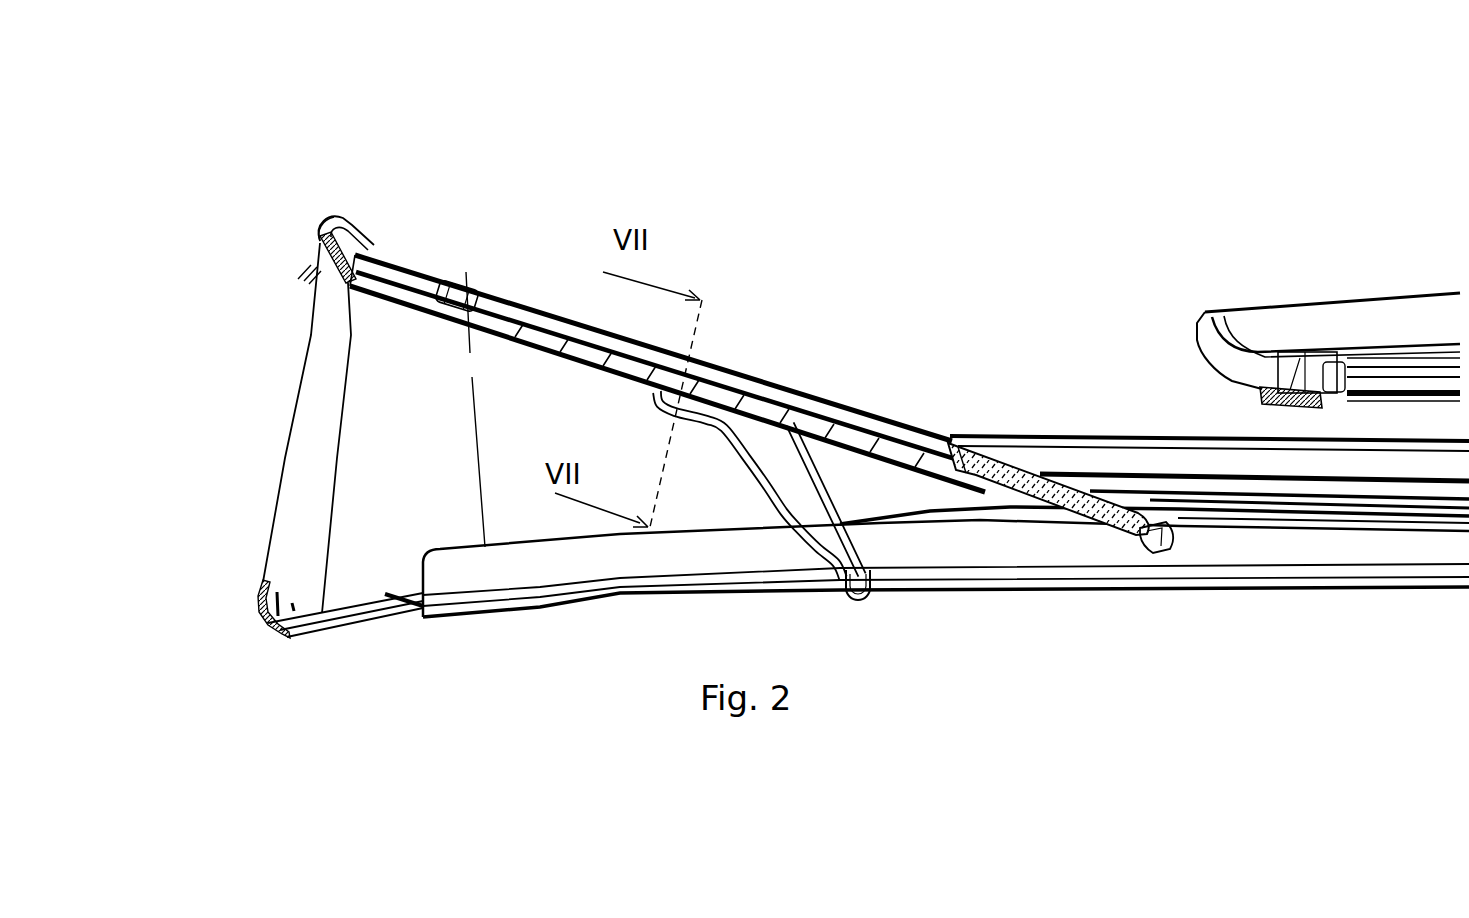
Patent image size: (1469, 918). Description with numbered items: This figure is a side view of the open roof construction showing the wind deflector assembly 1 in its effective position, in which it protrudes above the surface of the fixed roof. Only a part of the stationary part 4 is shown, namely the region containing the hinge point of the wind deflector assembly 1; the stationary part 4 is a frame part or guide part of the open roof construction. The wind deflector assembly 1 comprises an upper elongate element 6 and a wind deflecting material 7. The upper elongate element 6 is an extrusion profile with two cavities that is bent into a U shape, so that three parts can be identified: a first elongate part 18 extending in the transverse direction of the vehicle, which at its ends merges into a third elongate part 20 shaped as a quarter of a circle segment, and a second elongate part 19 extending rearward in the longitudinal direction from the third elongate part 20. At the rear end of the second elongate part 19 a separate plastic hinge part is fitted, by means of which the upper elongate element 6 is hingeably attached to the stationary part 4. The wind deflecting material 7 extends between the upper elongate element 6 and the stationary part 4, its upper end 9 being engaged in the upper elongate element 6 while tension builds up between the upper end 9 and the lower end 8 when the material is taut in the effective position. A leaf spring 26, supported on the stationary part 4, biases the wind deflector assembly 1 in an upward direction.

The wind deflector assembly 1 is at (381, 233).
The stationary part 4 is at (933, 550).
The upper elongate element 6 is at (304, 224).
The wind deflecting material 7 is at (311, 401).
The lower end 8 is at (293, 628).
The upper end 9 is at (302, 273).
The first elongate part 18 is at (345, 222).
The second elongate part 19 is at (773, 381).
The third elongate part 20 is at (424, 268).
The leaf spring 26 is at (823, 497).